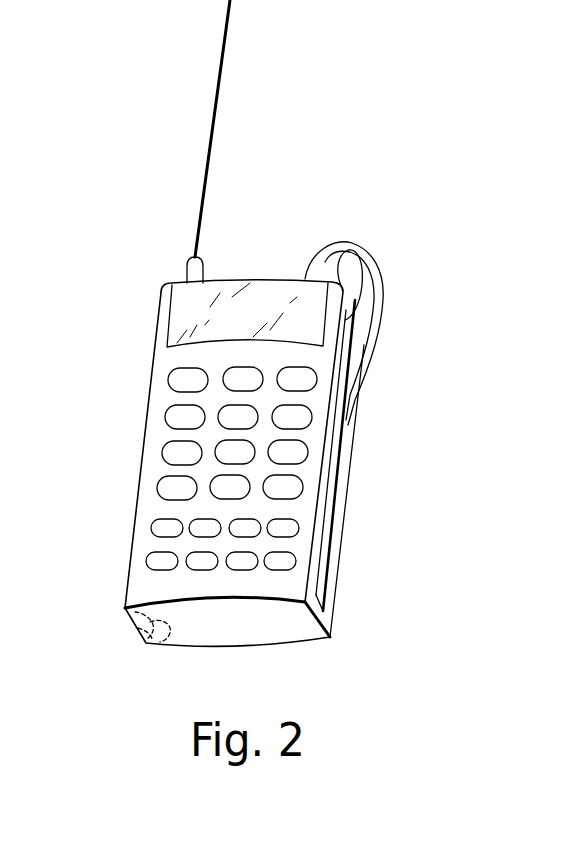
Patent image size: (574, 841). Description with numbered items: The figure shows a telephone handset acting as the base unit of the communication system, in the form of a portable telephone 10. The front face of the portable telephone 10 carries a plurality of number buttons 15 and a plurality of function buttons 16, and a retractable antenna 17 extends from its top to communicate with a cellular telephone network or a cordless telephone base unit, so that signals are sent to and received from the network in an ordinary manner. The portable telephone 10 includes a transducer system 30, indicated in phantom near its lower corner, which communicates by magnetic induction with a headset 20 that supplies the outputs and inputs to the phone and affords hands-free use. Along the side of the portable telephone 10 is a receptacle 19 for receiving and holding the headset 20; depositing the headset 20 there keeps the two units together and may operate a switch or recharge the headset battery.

The portable telephone 10 is at (364, 198).
The number buttons 15 is at (162, 357).
The function buttons 16 is at (148, 507).
The retractable antenna 17 is at (220, 105).
The receptacle 19 is at (330, 508).
The headset 20 is at (383, 282).
The transducer system 30 is at (163, 644).